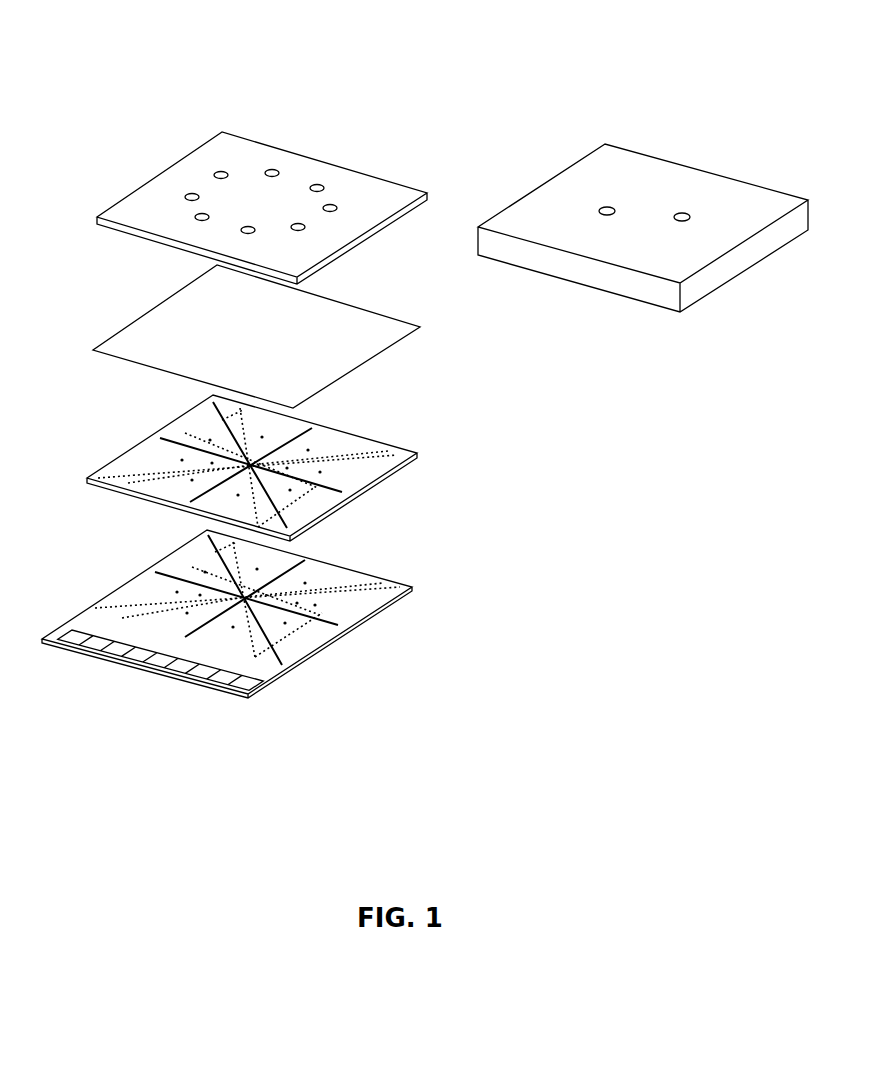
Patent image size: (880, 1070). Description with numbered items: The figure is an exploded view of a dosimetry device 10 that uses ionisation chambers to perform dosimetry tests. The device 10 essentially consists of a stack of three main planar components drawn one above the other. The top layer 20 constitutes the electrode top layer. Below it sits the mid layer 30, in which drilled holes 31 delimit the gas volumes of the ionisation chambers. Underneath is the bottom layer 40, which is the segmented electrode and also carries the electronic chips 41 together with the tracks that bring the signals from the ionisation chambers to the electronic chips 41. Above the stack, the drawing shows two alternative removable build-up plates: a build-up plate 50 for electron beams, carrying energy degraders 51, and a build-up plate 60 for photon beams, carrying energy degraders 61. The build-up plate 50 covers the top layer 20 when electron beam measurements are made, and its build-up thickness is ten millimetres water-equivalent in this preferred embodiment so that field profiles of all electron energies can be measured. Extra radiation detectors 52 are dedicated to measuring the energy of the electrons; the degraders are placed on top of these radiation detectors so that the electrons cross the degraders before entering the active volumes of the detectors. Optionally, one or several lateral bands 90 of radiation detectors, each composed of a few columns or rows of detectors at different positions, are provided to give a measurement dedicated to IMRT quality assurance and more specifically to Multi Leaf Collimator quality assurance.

The dosimetry device 10 is at (225, 98).
The removable build-up plate for electron beams 50 is at (237, 208).
The energy degraders 51 is at (281, 173).
The top layer 20 is at (112, 335).
The mid layer 30 is at (248, 468).
The drilled holes 31 is at (381, 452).
The bottom layer 40 is at (219, 608).
The electronic chips 41 is at (234, 678).
The extra radiation detectors 52 is at (314, 578).
The lateral bands of radiation detectors 90 is at (199, 561).
The removable build-up plate for photon beams 60 is at (637, 228).
The energy degraders 61 is at (698, 215).